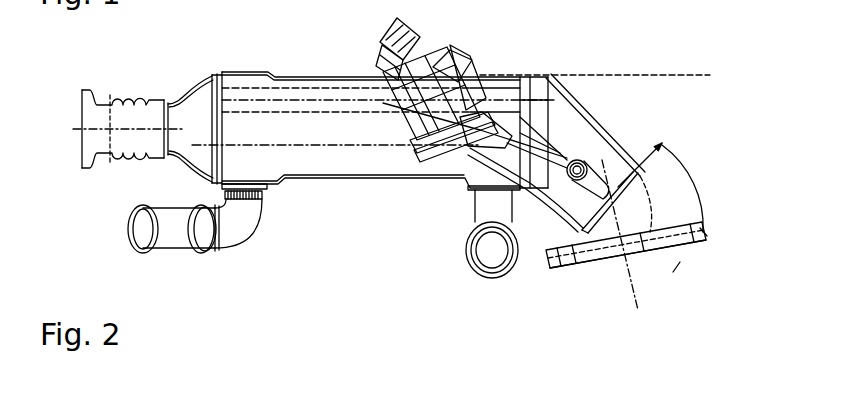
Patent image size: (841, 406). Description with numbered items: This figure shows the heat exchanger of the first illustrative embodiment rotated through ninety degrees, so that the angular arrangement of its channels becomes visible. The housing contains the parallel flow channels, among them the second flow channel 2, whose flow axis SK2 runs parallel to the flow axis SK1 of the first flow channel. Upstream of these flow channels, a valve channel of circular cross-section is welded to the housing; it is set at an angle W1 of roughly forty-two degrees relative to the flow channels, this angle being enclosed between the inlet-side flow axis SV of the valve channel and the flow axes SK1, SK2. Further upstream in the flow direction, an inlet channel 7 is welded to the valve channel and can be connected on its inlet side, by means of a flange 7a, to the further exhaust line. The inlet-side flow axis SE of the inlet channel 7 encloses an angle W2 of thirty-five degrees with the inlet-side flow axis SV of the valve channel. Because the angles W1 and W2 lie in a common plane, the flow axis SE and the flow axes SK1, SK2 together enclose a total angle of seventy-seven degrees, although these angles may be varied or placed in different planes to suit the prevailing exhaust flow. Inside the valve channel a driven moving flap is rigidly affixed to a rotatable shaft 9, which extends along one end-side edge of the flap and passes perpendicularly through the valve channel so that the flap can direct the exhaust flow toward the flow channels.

The second flow channel 2 is at (304, 100).
The flow axis of the second flow channel SK2 is at (203, 100).
The flow axis of the first flow channel SK1 is at (283, 145).
The inlet channel 7 is at (608, 222).
The flange 7a is at (548, 265).
The rotatable shaft 9 is at (577, 158).
The angle W1 is at (642, 144).
The angle W2 is at (697, 190).
The inlet-side flow axis of the valve channel SV is at (672, 256).
The inlet-side flow axis of the inlet channel SE is at (630, 284).